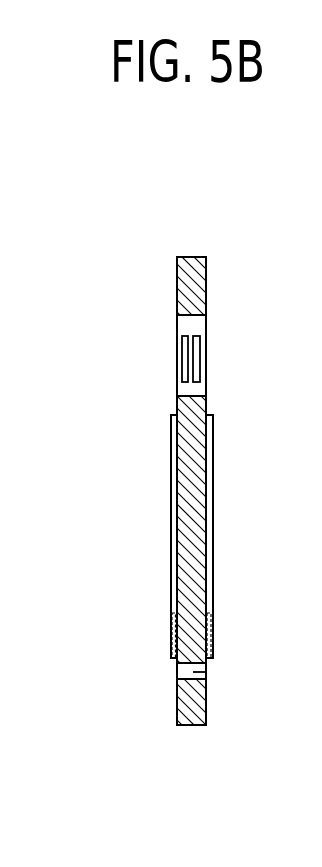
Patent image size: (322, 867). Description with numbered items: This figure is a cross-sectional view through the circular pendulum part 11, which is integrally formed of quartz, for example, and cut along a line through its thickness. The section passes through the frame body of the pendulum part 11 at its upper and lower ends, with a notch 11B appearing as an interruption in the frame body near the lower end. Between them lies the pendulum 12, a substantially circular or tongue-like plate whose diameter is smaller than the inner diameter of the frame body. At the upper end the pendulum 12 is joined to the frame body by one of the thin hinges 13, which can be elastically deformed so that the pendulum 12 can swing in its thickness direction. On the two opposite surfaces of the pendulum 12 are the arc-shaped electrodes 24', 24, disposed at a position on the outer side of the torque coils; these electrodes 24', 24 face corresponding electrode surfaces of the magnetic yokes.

The pendulum part 11 is at (193, 725).
The notch 11B is at (206, 672).
The pendulum 12 is at (206, 401).
The hinge 13 is at (200, 355).
The electrode 24 is at (236, 536).
The electrode 24' is at (149, 635).